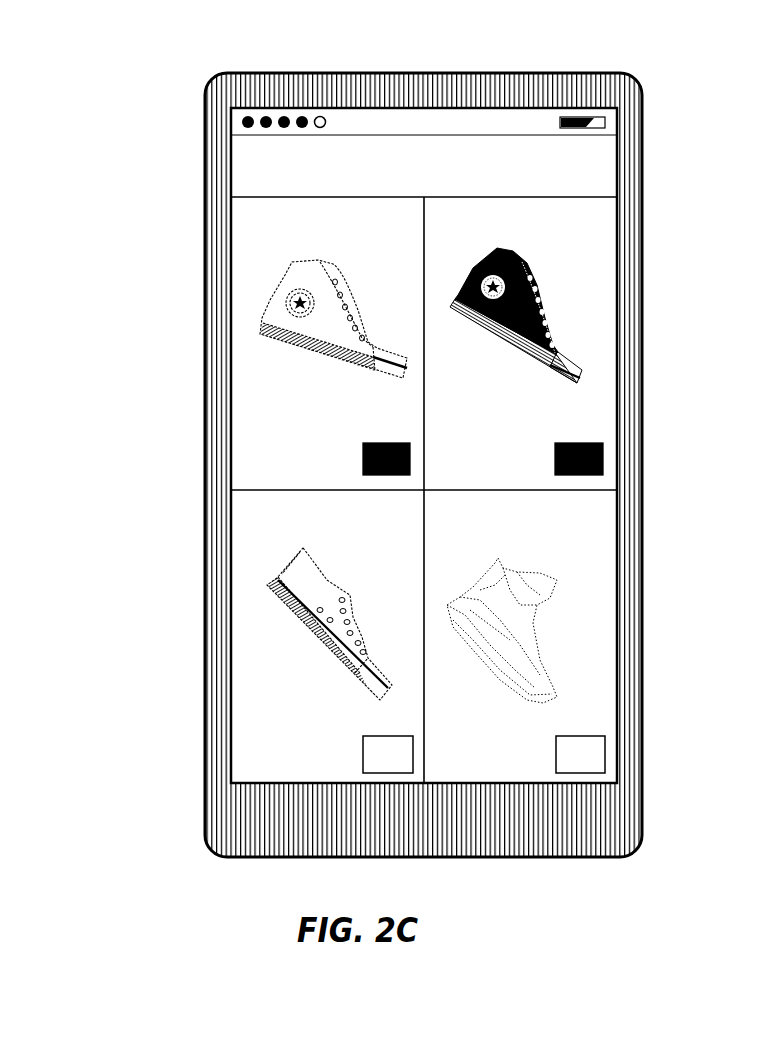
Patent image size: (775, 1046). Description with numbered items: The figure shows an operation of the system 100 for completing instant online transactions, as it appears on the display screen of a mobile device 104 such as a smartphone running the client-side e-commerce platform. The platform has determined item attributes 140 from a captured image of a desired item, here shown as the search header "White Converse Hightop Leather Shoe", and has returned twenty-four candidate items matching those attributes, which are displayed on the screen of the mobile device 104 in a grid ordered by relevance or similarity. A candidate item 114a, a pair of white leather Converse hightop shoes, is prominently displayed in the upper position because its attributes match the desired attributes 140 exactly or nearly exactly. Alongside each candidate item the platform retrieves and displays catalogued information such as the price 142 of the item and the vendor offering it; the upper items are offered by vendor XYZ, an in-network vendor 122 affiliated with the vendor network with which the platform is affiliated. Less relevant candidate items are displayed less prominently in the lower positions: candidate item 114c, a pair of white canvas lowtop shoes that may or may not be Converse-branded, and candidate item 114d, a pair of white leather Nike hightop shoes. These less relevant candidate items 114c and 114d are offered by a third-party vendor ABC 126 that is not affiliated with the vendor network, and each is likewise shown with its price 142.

The system for completing instant online transactions 100 is at (135, 143).
The mobile device 104 is at (633, 107).
The item attributes 140 is at (612, 158).
The candidate item 114a is at (270, 295).
The candidate item 114c is at (550, 305).
The candidate item 114d is at (555, 626).
The price 142 is at (275, 438).
The in-network vendor 122 is at (363, 455).
The third-party vendor 126 is at (605, 755).